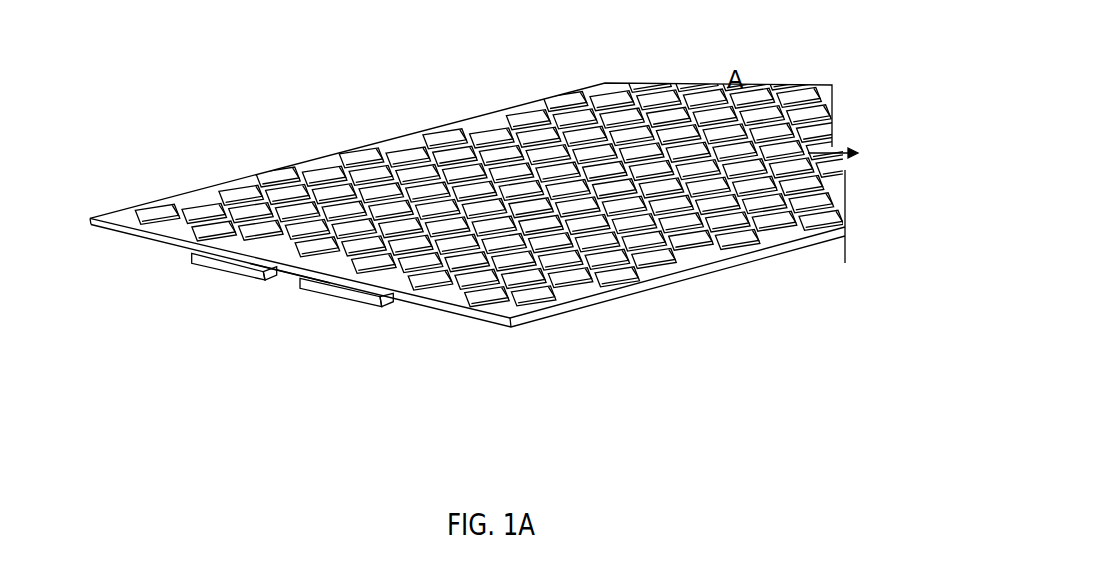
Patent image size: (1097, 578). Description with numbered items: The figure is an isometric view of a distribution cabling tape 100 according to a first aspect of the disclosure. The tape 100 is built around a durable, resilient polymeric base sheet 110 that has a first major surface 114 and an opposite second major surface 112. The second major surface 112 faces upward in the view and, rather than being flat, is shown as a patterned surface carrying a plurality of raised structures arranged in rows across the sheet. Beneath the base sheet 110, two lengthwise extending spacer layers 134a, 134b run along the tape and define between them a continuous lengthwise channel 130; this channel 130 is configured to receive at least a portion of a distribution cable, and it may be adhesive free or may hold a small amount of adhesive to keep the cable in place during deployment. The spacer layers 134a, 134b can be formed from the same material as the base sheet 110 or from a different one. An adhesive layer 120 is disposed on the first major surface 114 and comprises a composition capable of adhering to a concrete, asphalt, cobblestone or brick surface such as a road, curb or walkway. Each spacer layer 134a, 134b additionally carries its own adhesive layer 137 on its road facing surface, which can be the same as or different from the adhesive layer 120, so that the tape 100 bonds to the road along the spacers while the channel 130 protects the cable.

The distribution cabling tape 100 is at (460, 227).
The durable, resilient polymeric base sheet 110 is at (466, 124).
The second major surface 112 is at (107, 216).
The first major surface 114 is at (485, 317).
The adhesive layer 120 is at (450, 311).
The continuous lengthwise channel 130 is at (289, 284).
The spacer layer 134a is at (214, 252).
The spacer layer 134b is at (365, 293).
The additional adhesive layer 137 is at (327, 290).